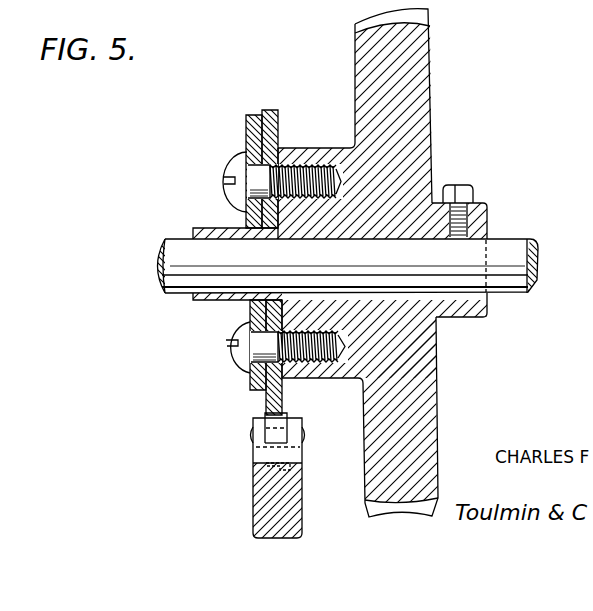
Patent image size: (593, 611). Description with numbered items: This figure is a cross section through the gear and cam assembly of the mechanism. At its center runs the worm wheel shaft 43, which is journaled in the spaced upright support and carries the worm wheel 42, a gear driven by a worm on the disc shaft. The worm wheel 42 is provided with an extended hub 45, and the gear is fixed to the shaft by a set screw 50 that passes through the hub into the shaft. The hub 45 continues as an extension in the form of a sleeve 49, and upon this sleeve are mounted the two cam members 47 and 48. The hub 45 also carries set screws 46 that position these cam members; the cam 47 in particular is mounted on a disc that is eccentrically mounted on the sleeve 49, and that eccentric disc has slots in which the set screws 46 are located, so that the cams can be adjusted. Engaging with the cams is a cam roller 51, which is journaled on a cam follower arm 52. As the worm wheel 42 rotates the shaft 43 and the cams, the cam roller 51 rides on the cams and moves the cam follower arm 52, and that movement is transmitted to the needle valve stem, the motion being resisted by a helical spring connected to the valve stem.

The worm wheel 42 is at (430, 60).
The worm wheel shaft 43 is at (542, 218).
The extended hub 45 is at (312, 147).
The set screws 46 is at (235, 166).
The cam member 47 is at (255, 112).
The cam member 48 is at (274, 108).
The sleeve 49 is at (209, 228).
The set screw 50 is at (468, 186).
The cam roller 51 is at (263, 415).
The cam follower arm 52 is at (253, 457).